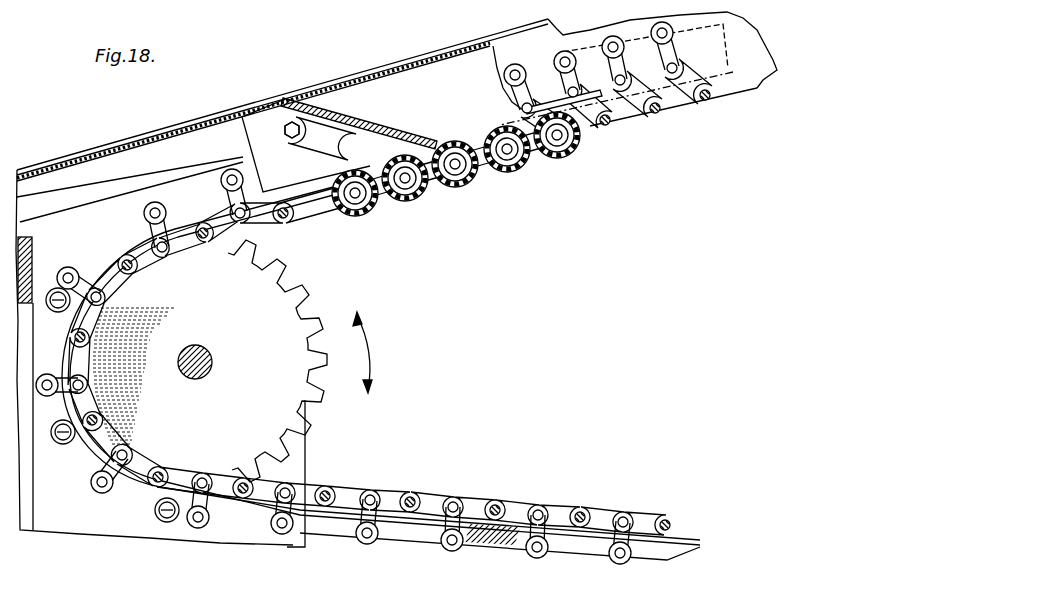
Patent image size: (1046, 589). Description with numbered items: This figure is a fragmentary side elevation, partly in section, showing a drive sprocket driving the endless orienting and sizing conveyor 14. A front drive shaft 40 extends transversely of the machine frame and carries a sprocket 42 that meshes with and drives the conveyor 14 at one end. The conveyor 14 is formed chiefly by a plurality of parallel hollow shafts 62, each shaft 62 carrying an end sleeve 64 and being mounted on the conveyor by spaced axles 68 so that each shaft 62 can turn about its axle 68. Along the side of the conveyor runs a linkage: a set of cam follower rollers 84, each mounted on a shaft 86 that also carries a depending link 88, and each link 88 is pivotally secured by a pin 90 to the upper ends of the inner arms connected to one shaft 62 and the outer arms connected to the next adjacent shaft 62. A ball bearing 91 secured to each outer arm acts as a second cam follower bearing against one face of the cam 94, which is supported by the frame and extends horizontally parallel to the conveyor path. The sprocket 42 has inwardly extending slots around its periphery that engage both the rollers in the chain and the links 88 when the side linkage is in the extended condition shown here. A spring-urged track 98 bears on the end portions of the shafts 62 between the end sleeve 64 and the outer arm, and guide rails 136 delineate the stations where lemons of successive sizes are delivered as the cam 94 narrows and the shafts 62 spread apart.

The orienting and sizing conveyor 14 is at (534, 487).
The front drive shaft 40 is at (212, 363).
The sprocket 42 is at (312, 303).
The hollow shaft 62 is at (512, 163).
The end sleeve 64 is at (545, 154).
The axle 68 is at (337, 487).
The roller 84 is at (624, 564).
The shaft 86 is at (504, 76).
The link 88 is at (613, 547).
The pin 90 is at (624, 518).
The ball bearing 91 is at (408, 493).
The cam 94 is at (747, 86).
The track 98 is at (593, 110).
The guide rail 136 is at (522, 108).